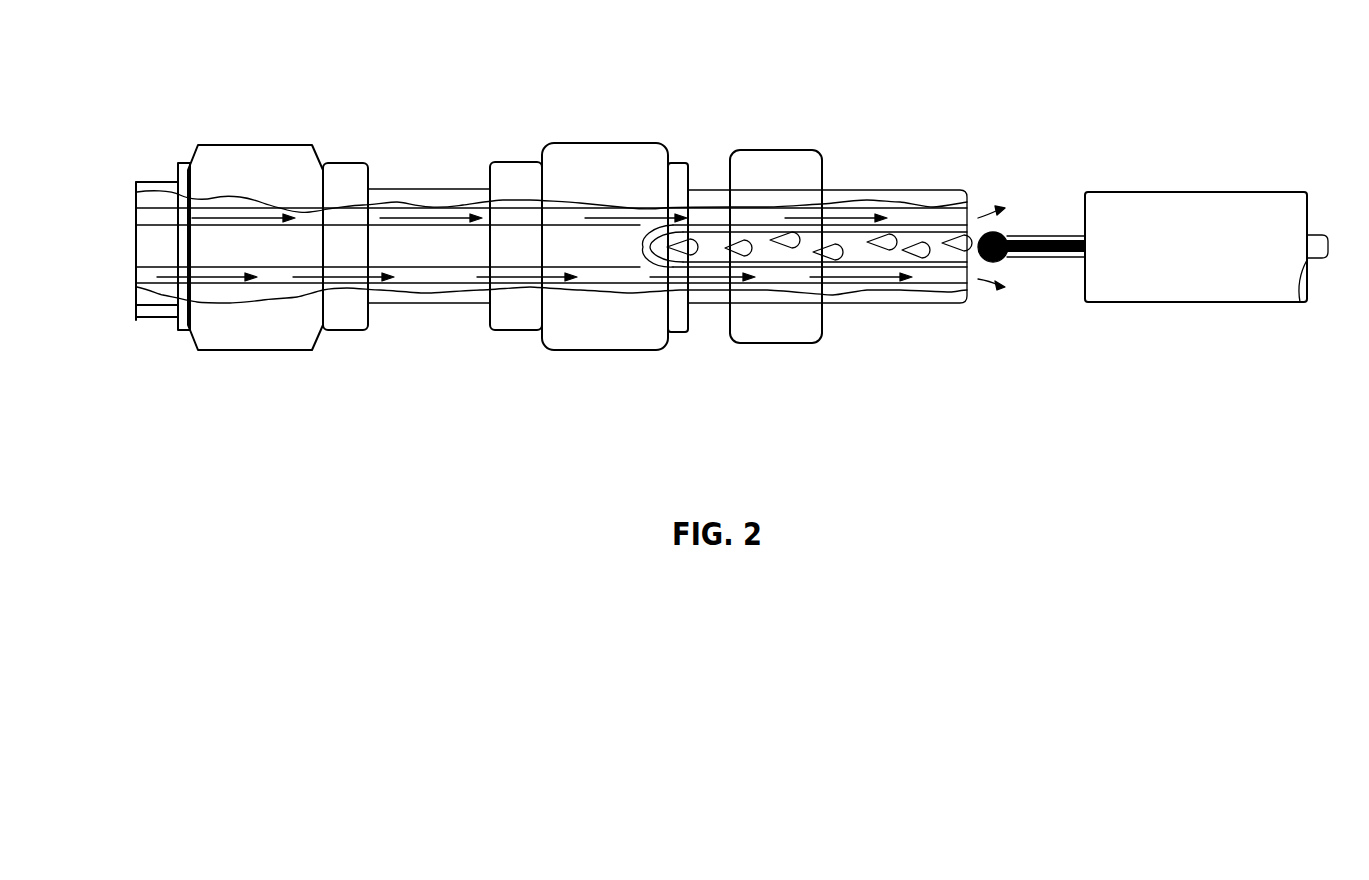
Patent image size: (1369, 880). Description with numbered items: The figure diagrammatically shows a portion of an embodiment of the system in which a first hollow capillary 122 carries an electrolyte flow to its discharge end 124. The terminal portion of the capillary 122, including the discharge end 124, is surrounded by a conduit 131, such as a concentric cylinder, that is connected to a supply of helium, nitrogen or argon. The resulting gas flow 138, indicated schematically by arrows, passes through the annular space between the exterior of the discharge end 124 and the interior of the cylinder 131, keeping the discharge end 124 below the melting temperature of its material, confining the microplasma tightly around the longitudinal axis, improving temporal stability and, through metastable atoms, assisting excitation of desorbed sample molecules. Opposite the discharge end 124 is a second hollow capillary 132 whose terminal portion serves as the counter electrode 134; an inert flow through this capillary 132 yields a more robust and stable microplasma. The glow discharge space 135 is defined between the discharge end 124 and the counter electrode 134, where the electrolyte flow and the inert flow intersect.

The first hollow capillary 122 is at (938, 227).
The discharge end 124 is at (1015, 223).
The conduit 131 is at (452, 197).
The second hollow capillary 132 is at (1047, 258).
The counter electrode 134 is at (1015, 232).
The glow discharge space 135 is at (1013, 265).
The gas flow 138 is at (408, 207).